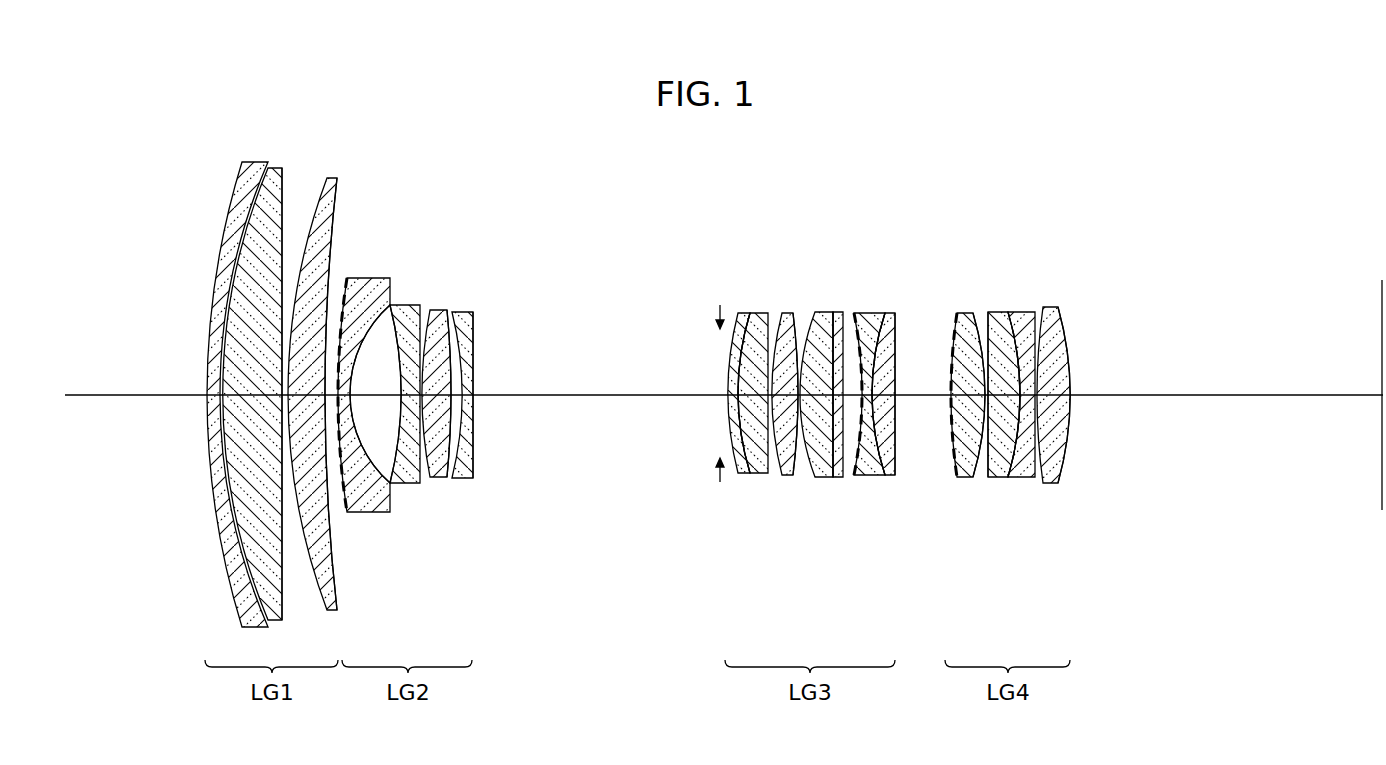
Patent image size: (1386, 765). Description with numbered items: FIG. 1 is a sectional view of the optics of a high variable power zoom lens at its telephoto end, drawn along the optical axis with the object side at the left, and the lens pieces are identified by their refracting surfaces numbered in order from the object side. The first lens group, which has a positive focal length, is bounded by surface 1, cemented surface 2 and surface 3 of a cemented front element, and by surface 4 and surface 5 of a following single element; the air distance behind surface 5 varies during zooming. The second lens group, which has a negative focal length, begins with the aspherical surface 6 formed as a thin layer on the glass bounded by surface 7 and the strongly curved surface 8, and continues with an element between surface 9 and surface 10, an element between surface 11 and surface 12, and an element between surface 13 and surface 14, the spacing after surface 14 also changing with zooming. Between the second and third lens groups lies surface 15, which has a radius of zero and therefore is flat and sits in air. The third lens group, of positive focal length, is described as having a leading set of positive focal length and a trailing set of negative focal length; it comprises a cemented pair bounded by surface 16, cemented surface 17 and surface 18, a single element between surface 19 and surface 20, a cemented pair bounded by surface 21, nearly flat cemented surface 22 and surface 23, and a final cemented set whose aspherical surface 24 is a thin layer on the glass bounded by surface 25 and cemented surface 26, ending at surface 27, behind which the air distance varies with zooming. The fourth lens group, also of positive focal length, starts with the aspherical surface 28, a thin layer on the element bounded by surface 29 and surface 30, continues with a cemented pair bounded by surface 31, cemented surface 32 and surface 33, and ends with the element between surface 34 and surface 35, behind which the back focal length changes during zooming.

The lens surface 1 is at (238, 180).
The lens surface 2 is at (261, 186).
The lens surface 3 is at (283, 203).
The lens surface 4 is at (304, 204).
The lens surface 5 is at (336, 209).
The aspherical lens surface 6 is at (343, 306).
The lens surface 7 is at (367, 308).
The lens surface 8 is at (371, 302).
The lens surface 9 is at (418, 322).
The lens surface 10 is at (432, 314).
The lens surface 11 is at (440, 469).
The lens surface 12 is at (459, 479).
The lens surface 13 is at (474, 452).
The lens surface 14 is at (478, 428).
The surface 15 is at (719, 305).
The lens surface 16 is at (736, 328).
The lens surface 17 is at (744, 327).
The lens surface 18 is at (762, 321).
The lens surface 19 is at (777, 322).
The lens surface 20 is at (795, 323).
The lens surface 21 is at (805, 465).
The lens surface 22 is at (817, 464).
The lens surface 23 is at (850, 464).
The aspherical lens surface 24 is at (853, 321).
The lens surface 25 is at (877, 324).
The lens surface 26 is at (868, 466).
The lens surface 27 is at (907, 464).
The aspherical lens surface 28 is at (957, 333).
The lens surface 29 is at (981, 334).
The lens surface 30 is at (983, 464).
The lens surface 31 is at (985, 464).
The lens surface 32 is at (1015, 336).
The lens surface 33 is at (1028, 336).
The lens surface 34 is at (1044, 334).
The lens surface 35 is at (1070, 366).